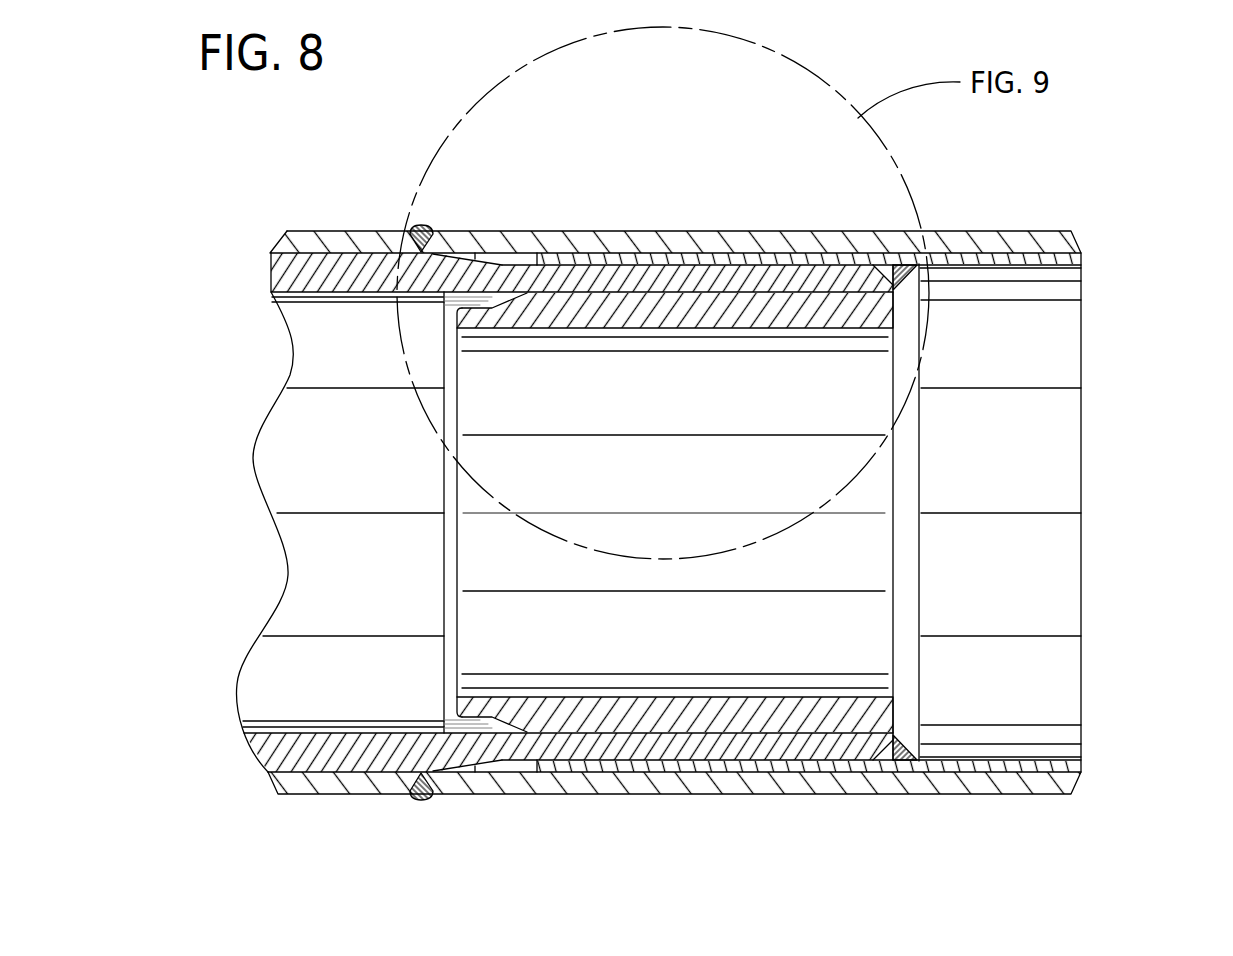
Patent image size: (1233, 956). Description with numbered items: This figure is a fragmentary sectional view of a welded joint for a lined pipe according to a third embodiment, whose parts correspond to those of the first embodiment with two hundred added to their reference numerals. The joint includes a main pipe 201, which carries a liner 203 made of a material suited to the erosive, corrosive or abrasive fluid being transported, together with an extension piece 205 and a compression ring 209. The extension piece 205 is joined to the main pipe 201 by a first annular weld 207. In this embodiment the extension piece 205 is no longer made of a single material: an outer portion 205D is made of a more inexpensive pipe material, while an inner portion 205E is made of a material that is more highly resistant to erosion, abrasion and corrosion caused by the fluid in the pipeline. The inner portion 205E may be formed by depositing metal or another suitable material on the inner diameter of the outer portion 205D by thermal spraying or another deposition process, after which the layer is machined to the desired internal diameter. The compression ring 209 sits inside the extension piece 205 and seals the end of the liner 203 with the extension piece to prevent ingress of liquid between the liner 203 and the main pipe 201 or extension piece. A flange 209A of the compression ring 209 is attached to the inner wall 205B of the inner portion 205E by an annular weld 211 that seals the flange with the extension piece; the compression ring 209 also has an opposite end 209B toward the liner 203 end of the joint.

The main pipe 201 is at (343, 212).
The liner 203 is at (248, 282).
The extension piece 205 is at (988, 210).
The inner wall 205B is at (1048, 253).
The outer portion 205D is at (617, 243).
The inner portion 205E is at (988, 257).
The first annular weld 207 is at (423, 800).
The compression ring 209 is at (918, 721).
The flange 209A is at (886, 262).
The second end of insert 209B is at (452, 307).
The annular weld 211 is at (905, 477).